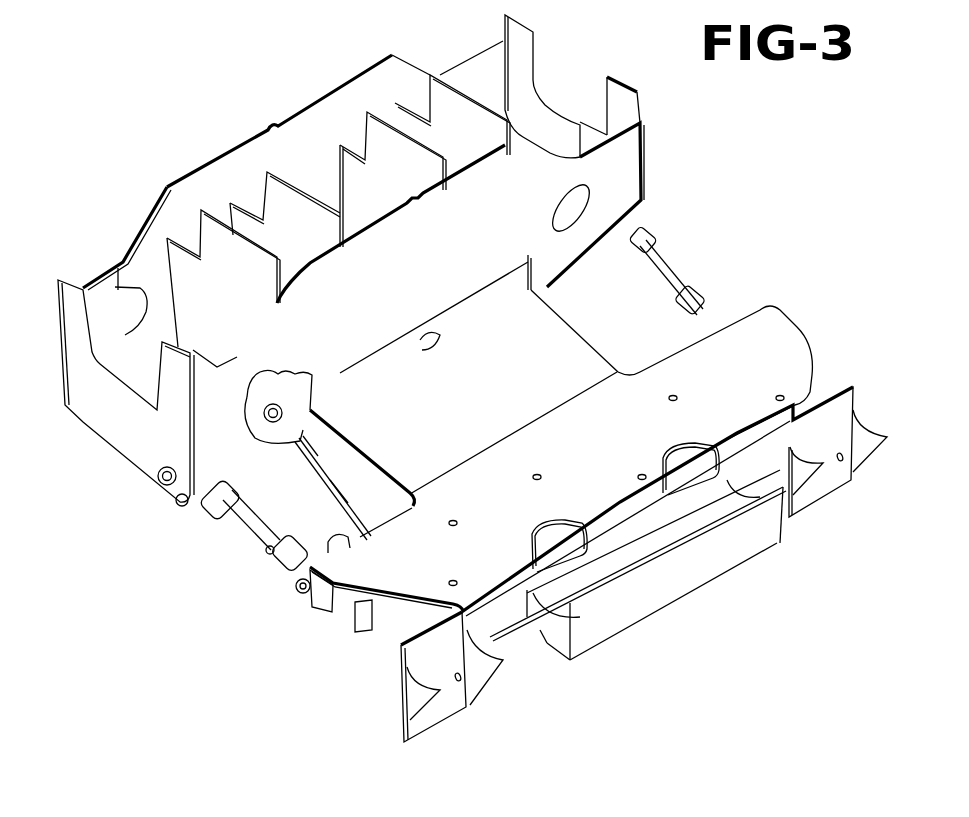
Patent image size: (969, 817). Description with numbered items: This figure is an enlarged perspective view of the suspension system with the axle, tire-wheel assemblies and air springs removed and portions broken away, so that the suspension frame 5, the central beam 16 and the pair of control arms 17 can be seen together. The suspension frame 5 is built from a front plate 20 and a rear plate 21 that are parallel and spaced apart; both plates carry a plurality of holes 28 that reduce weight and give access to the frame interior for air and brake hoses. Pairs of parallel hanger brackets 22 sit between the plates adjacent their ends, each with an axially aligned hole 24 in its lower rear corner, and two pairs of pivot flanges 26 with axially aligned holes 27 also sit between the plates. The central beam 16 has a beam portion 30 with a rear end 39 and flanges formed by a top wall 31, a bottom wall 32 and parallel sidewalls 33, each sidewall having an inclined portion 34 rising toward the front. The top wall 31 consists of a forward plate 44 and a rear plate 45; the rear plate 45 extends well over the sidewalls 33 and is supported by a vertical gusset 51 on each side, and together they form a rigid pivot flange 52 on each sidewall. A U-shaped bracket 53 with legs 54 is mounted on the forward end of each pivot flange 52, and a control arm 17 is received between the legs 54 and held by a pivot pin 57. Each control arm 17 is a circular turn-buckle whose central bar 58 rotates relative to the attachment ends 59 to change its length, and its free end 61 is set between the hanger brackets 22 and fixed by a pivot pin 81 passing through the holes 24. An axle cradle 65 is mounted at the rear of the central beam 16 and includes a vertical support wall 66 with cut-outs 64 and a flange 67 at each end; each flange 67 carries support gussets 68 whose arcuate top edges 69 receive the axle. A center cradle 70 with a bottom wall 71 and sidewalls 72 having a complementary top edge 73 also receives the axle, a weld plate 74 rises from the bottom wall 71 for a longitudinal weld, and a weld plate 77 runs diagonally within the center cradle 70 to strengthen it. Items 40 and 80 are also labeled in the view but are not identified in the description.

The suspension frame 5 is at (163, 192).
The central beam 16 is at (400, 353).
The control arms 17 is at (683, 268).
The front plate 20 is at (327, 90).
The rear plate 21 is at (473, 273).
The hanger brackets 22 is at (480, 83).
The hole 24 is at (180, 500).
The pivot flanges 26 is at (207, 228).
The holes 27 is at (312, 412).
The holes 28 is at (120, 268).
The beam portion 30 is at (553, 360).
The top wall 31 is at (665, 383).
The bottom wall 32 is at (313, 466).
The sidewalls 33 is at (368, 508).
The inclined portion 34 is at (348, 490).
The rear end 39 is at (800, 383).
The hinge hook 40 is at (422, 350).
The forward plate 44 is at (533, 333).
The rear plate 45 is at (763, 367).
The vertical gusset 51 is at (363, 607).
The pivot flange 52 is at (773, 310).
The U-shaped bracket 53 is at (320, 613).
The legs 54 is at (745, 307).
The pivot pin 57 is at (300, 587).
The central bar 58 is at (660, 267).
The attachment ends 59 is at (640, 240).
The free end 61 is at (212, 478).
The cut-outs 64 is at (653, 507).
The axle cradle 65 is at (397, 670).
The vertical support wall 66 is at (723, 507).
The flange 67 is at (833, 487).
The support gussets 68 is at (867, 457).
The arcuate top edge 69 is at (867, 430).
The center cradle 70 is at (705, 574).
The bottom wall 71 is at (542, 660).
The sidewalls 72 is at (548, 652).
The top edge 73 is at (580, 603).
The weld plate 74 is at (623, 607).
The weld plate 77 is at (703, 513).
The bolt 80 is at (280, 413).
The pivot pin 81 is at (162, 490).